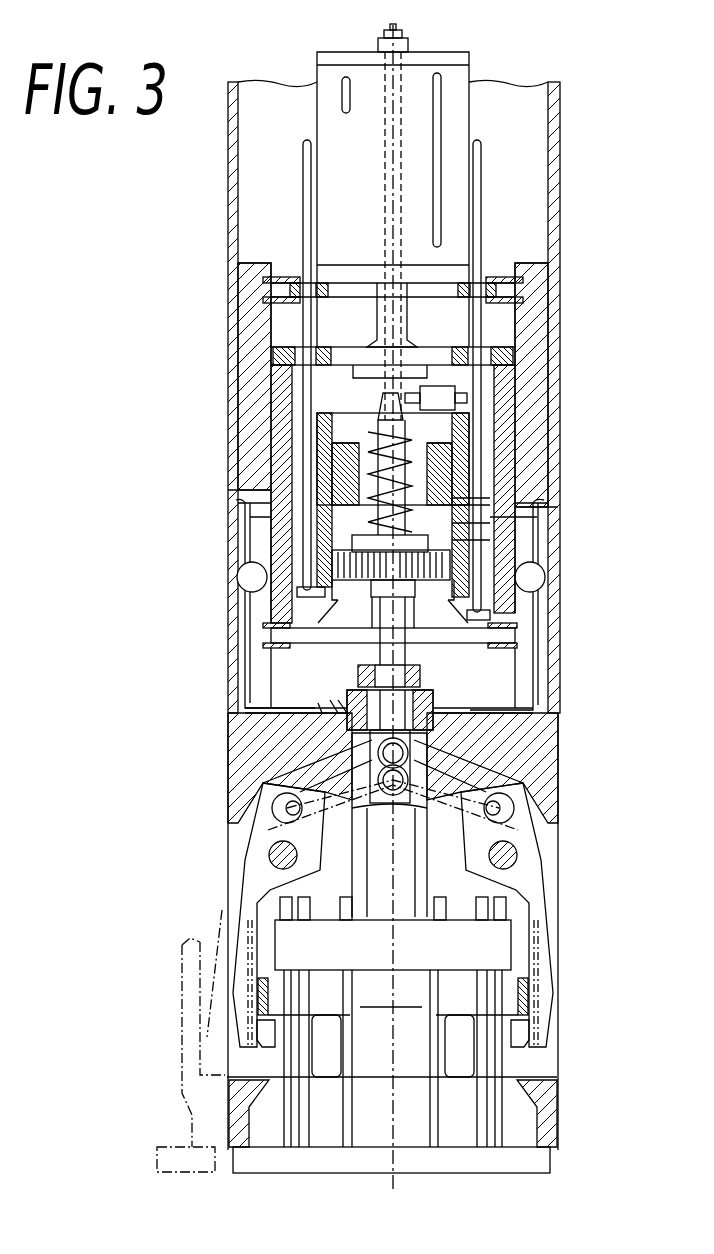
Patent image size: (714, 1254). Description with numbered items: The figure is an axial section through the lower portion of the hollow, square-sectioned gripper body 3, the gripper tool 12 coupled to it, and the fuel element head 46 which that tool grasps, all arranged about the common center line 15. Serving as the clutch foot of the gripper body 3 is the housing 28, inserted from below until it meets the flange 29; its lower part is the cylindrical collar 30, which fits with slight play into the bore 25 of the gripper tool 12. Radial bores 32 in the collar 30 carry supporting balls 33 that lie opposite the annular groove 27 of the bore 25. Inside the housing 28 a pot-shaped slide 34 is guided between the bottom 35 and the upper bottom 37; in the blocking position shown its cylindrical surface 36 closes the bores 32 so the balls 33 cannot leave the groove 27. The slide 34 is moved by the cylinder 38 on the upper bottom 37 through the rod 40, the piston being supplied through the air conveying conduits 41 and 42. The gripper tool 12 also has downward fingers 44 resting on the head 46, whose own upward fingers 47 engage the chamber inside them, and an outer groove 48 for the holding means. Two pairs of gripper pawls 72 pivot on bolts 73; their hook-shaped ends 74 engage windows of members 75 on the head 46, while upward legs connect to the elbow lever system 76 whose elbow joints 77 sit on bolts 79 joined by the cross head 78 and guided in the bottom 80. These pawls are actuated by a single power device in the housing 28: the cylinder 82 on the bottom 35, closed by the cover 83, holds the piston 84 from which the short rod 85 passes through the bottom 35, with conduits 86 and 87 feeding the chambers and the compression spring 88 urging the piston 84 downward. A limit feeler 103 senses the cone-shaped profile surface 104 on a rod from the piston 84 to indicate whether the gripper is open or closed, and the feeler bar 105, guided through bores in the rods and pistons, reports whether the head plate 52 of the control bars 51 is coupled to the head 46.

The gripper body 3 is at (232, 176).
The gripper tool 12 is at (212, 724).
The center line 15 is at (400, 1043).
The bore 25 is at (250, 680).
The annular groove 27 is at (240, 568).
The housing 28 is at (252, 272).
The flange 29 is at (232, 490).
The cylindrical collar 30 is at (268, 654).
The radial bores 32 is at (260, 600).
The supporting balls 33 is at (532, 578).
The slide 34 is at (282, 356).
The bottom 35 is at (500, 633).
The cylindrical surface 36 is at (245, 560).
The upper bottom 37 is at (498, 272).
The cylinder 38 is at (460, 100).
The rod 40 is at (402, 324).
The air conveying conduit 41 is at (445, 135).
The air conveying conduit 42 is at (340, 90).
The fingers 44 is at (545, 1082).
The fuel element head 46 is at (240, 1100).
The fingers 47 is at (522, 985).
The groove 48 is at (250, 785).
The control bars 51 is at (345, 1110).
The head plate 52 is at (400, 858).
The gripper pawls 72 is at (245, 900).
The bolts 73 is at (269, 855).
The hook-shaped ends 74 is at (262, 1040).
The members 75 is at (268, 985).
The elbow lever system 76 is at (364, 802).
The elbow joints 77 is at (395, 795).
The cross head 78 is at (420, 672).
The bolts 79 is at (420, 718).
The bottom 80 is at (330, 706).
The cylinder 82 is at (480, 551).
The cover 83 is at (345, 420).
The piston 84 is at (435, 584).
The short rod 85 is at (385, 632).
The air conveying conduit 86 is at (303, 150).
The air conveying conduit 87 is at (481, 165).
The compression spring 88 is at (500, 531).
The limit feeler 103 is at (500, 382).
The profile surface 104 is at (385, 400).
The feeler bar 105 is at (445, 392).